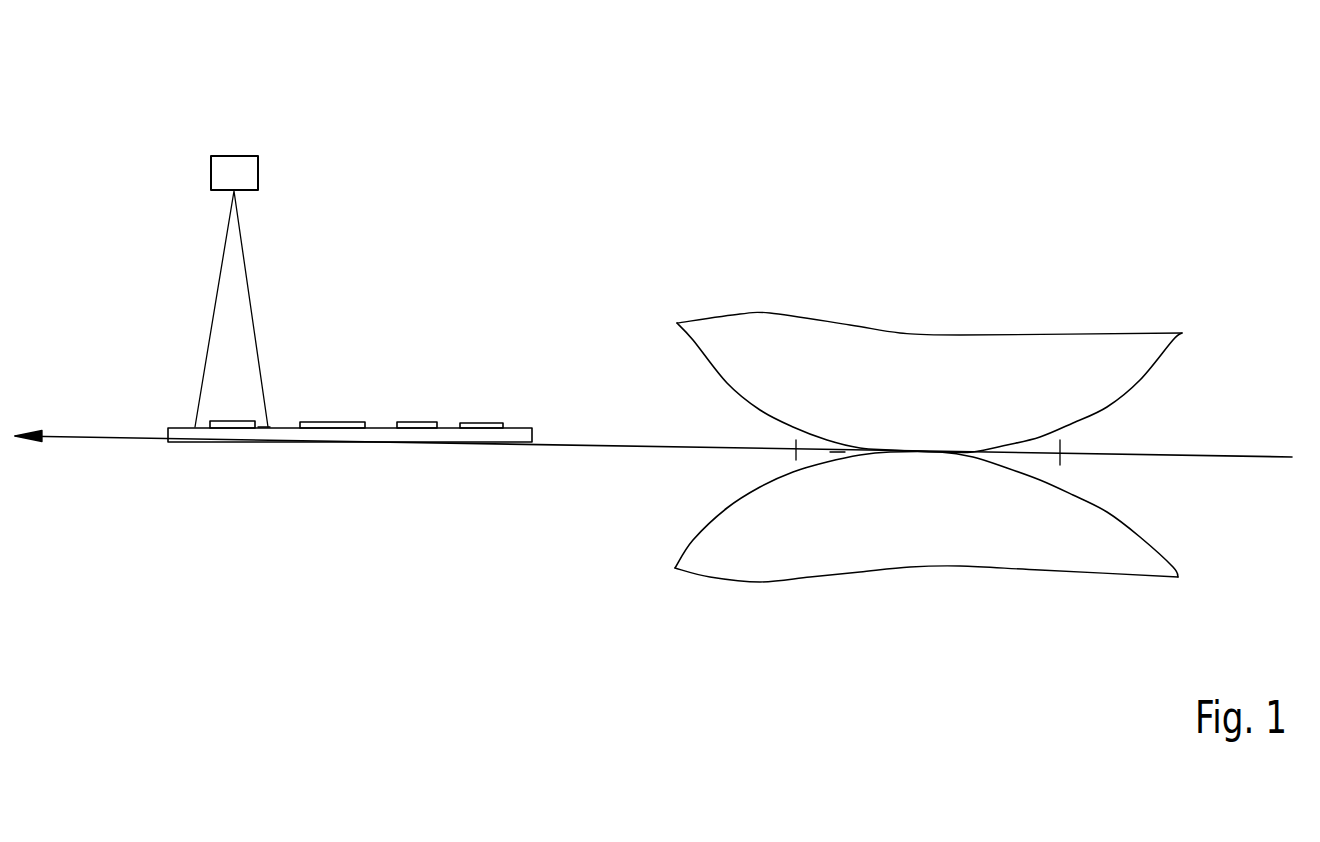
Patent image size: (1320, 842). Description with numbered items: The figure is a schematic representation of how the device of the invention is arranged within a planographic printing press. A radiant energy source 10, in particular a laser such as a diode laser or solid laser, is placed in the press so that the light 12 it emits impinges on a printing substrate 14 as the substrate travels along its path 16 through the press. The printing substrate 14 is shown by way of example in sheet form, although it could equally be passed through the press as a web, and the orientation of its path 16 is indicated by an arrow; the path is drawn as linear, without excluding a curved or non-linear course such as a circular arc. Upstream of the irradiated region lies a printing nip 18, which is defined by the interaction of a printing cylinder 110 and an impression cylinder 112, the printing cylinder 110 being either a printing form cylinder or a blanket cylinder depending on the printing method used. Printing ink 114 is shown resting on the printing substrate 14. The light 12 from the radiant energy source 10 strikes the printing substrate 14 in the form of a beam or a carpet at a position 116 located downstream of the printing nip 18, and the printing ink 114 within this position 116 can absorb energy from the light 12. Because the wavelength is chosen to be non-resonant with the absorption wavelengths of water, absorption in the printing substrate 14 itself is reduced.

The radiant energy source 10 is at (233, 158).
The light 12 is at (230, 340).
The printing substrate 14 is at (302, 445).
The path 16 is at (90, 432).
The printing nip 18 is at (835, 453).
The printing cylinder 110 is at (970, 355).
The impression cylinder 112 is at (805, 540).
The printing ink 114 is at (222, 443).
The position 116 is at (260, 430).